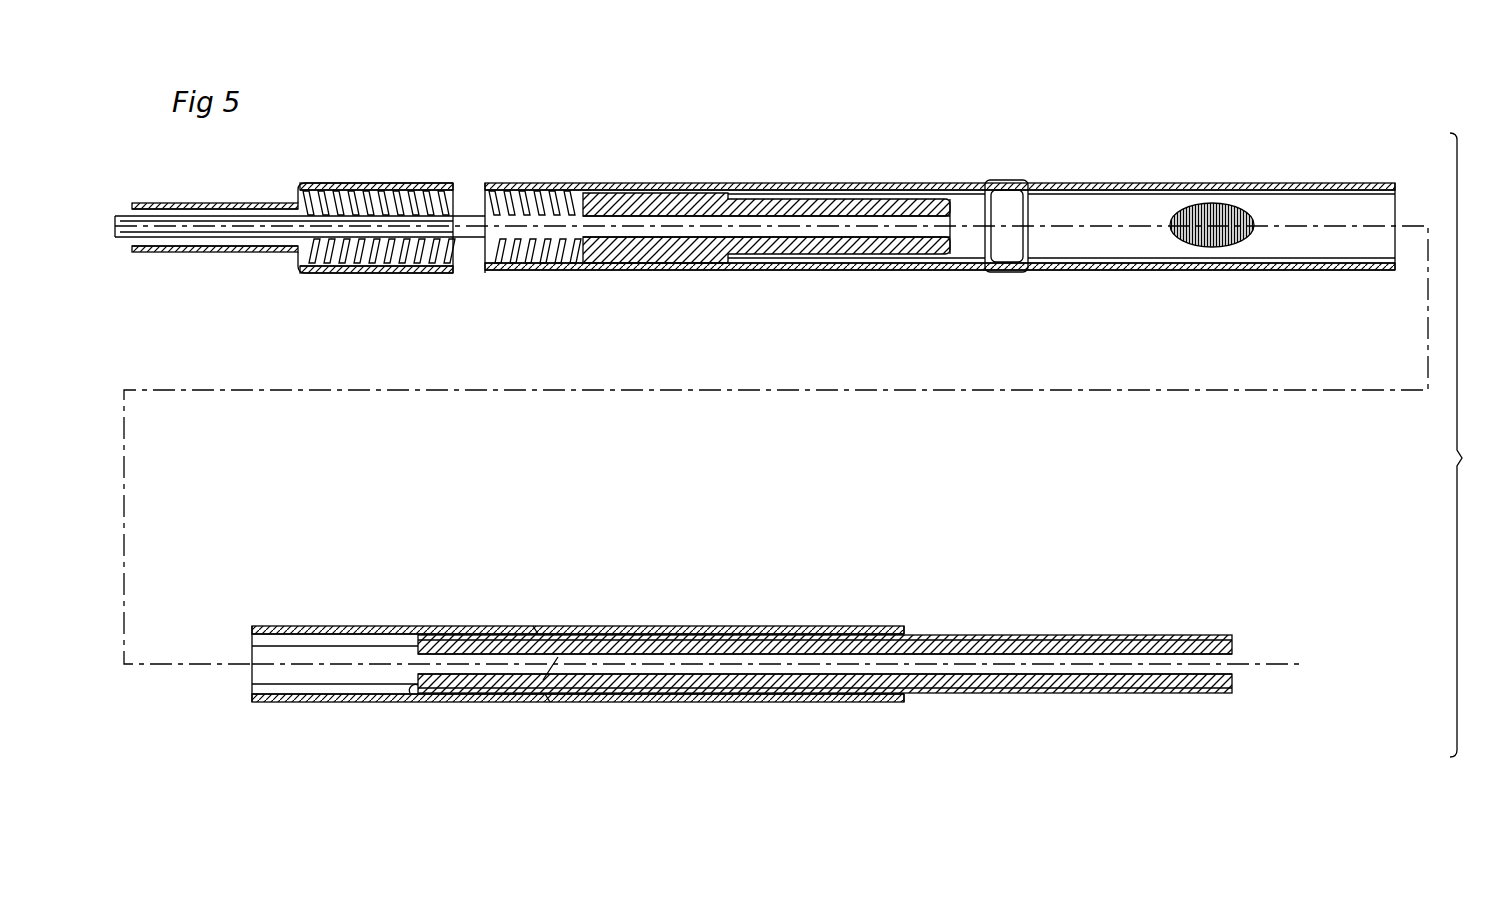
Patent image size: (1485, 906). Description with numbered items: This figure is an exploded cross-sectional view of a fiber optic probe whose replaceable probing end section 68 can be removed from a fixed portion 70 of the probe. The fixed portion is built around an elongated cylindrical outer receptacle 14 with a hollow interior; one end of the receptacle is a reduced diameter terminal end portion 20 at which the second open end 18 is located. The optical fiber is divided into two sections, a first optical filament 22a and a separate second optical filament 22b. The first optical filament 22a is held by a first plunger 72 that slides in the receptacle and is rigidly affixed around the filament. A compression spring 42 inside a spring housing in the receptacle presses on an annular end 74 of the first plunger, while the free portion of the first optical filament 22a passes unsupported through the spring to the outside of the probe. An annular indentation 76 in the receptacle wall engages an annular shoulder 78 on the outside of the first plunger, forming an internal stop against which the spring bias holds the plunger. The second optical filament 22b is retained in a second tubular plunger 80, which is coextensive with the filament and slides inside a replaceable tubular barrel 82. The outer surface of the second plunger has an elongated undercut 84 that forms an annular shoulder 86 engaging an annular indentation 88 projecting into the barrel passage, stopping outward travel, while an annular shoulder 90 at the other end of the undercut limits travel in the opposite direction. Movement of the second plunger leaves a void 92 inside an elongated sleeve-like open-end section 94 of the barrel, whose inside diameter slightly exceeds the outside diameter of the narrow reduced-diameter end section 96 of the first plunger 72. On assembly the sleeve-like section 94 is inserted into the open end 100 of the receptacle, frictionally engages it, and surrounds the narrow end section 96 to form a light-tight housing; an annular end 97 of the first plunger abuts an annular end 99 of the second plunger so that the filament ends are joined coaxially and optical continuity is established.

The outer receptacle 14 is at (668, 271).
The second open end 18 is at (118, 240).
The reduced diameter terminal end portion 20 is at (222, 204).
The first optical filament 22a is at (218, 233).
The second optical filament 22b is at (982, 636).
The compression spring 42 is at (396, 188).
The replaceable probing end section 68 is at (697, 626).
The fixed portion 70 is at (830, 163).
The first plunger 72 is at (619, 195).
The annular end 74 is at (500, 191).
The annular indentation 76 is at (737, 263).
The annular shoulder 78 is at (728, 193).
The second tubular plunger 80 is at (765, 703).
The replaceable tubular barrel 82 is at (630, 703).
The elongated undercut 84 is at (607, 637).
The annular shoulder 86 is at (505, 630).
The annular indentation 88 is at (570, 630).
The annular shoulder 90 is at (685, 696).
The void 92 is at (335, 684).
The sleeve-like open-end section 94 is at (325, 632).
The reduced-diameter end section 96 is at (858, 199).
The annular end 97 is at (957, 245).
The annular end 99 is at (402, 694).
The open end 100 is at (1130, 210).